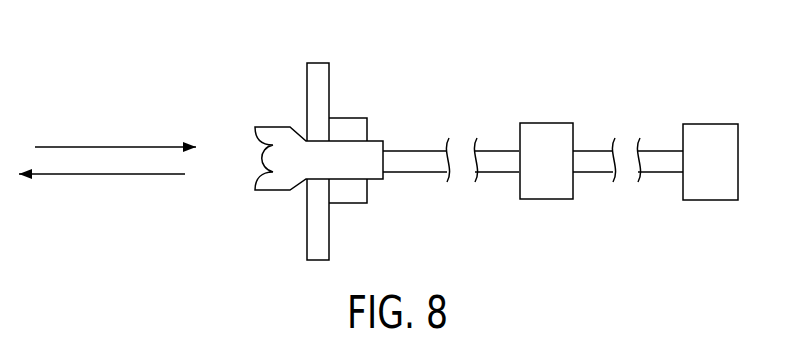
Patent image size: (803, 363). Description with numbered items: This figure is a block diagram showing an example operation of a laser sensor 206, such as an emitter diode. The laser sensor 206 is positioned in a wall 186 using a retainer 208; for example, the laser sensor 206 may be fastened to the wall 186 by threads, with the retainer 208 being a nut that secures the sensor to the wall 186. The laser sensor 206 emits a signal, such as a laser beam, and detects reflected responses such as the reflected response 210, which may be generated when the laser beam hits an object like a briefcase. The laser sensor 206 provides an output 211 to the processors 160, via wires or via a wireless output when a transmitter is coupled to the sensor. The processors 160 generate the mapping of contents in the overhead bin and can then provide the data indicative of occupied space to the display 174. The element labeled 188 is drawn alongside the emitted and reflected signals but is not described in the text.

The reflected response 210 is at (87, 146).
The return flow direction arrow 188 is at (88, 178).
The wall 186 is at (306, 106).
The retainer 208 is at (348, 105).
The laser sensor 206 is at (251, 189).
The output 211 is at (418, 181).
The processors 160 is at (562, 178).
The display 174 is at (726, 178).